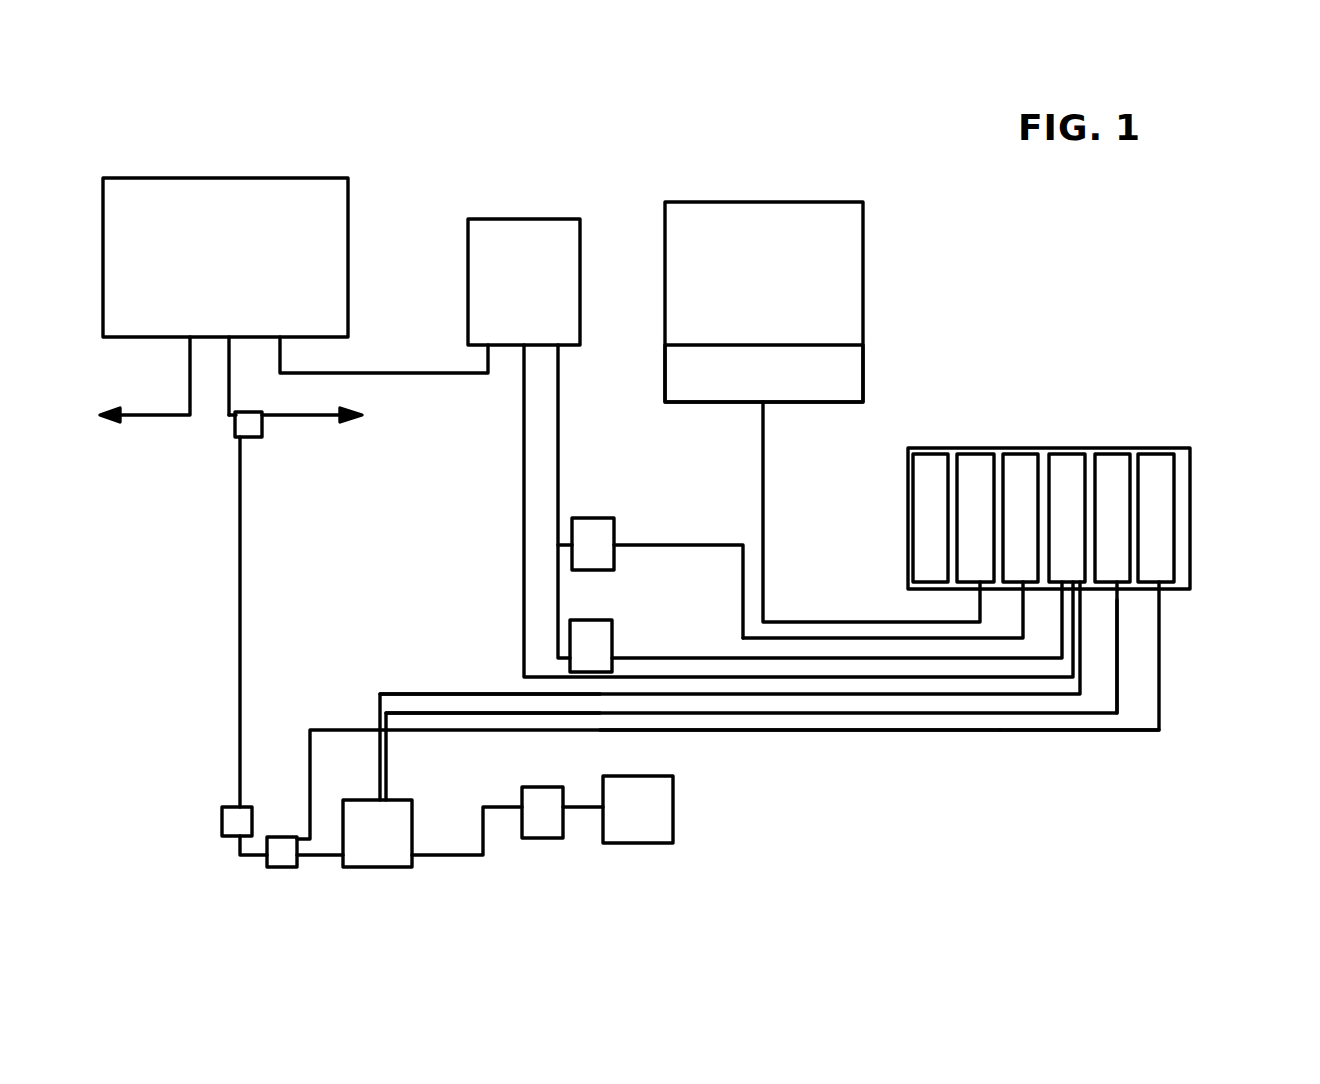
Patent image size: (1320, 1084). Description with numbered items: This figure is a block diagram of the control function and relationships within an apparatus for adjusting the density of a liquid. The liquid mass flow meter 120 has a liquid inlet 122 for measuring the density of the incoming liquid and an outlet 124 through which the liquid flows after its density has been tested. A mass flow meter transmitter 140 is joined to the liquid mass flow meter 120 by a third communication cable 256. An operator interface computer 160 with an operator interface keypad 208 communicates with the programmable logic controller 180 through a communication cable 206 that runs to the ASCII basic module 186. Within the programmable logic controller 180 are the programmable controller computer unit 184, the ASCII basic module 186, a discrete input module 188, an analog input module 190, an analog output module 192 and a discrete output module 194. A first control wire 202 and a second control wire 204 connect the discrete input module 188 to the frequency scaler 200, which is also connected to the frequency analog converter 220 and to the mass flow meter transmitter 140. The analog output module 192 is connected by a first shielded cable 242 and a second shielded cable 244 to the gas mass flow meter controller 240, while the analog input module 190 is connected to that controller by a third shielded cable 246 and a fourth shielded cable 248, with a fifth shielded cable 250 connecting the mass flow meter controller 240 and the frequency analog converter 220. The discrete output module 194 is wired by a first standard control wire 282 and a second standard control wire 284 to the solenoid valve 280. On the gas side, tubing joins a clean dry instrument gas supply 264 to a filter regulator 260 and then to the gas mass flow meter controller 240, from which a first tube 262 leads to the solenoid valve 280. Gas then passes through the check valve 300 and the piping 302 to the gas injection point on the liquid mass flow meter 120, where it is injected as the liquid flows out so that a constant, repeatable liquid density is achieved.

The liquid mass flow meter 120 is at (202, 272).
The liquid inlet 122 is at (85, 386).
The outlet 124 is at (368, 410).
The mass flow meter transmitter 140 is at (501, 304).
The operator interface computer 160 is at (741, 286).
The operator interface keypad 208 is at (741, 395).
The programmable logic controller 180 is at (905, 533).
The programmable controller computer unit 184 is at (920, 465).
The ASCII basic module 186 is at (975, 462).
The discrete input module 188 is at (1020, 462).
The analog input module 190 is at (1067, 462).
The analog output module 192 is at (1113, 462).
The discrete output module 194 is at (1157, 462).
The frequency scaler 200 is at (598, 523).
The first control wire 202 is at (694, 545).
The second control wire 204 is at (743, 626).
The communication cable 206 is at (840, 620).
The frequency analog converter 220 is at (600, 617).
The gas mass flow meter controller 240 is at (395, 852).
The first shielded cable 242 is at (1118, 694).
The second shielded cable 244 is at (818, 732).
The third shielded cable 246 is at (445, 692).
The fourth shielded cable 248 is at (378, 703).
The fifth shielded cable 250 is at (522, 640).
The third communication cable 256 is at (410, 373).
The filter regulator 260 is at (547, 830).
The first tube 262 is at (325, 858).
The clean dry instrument gas supply 264 is at (665, 822).
The solenoid valve 280 is at (286, 842).
The first standard control wire 282 is at (240, 428).
The second standard control wire 284 is at (1076, 732).
The check valve 300 is at (226, 822).
The piping 302 is at (240, 639).